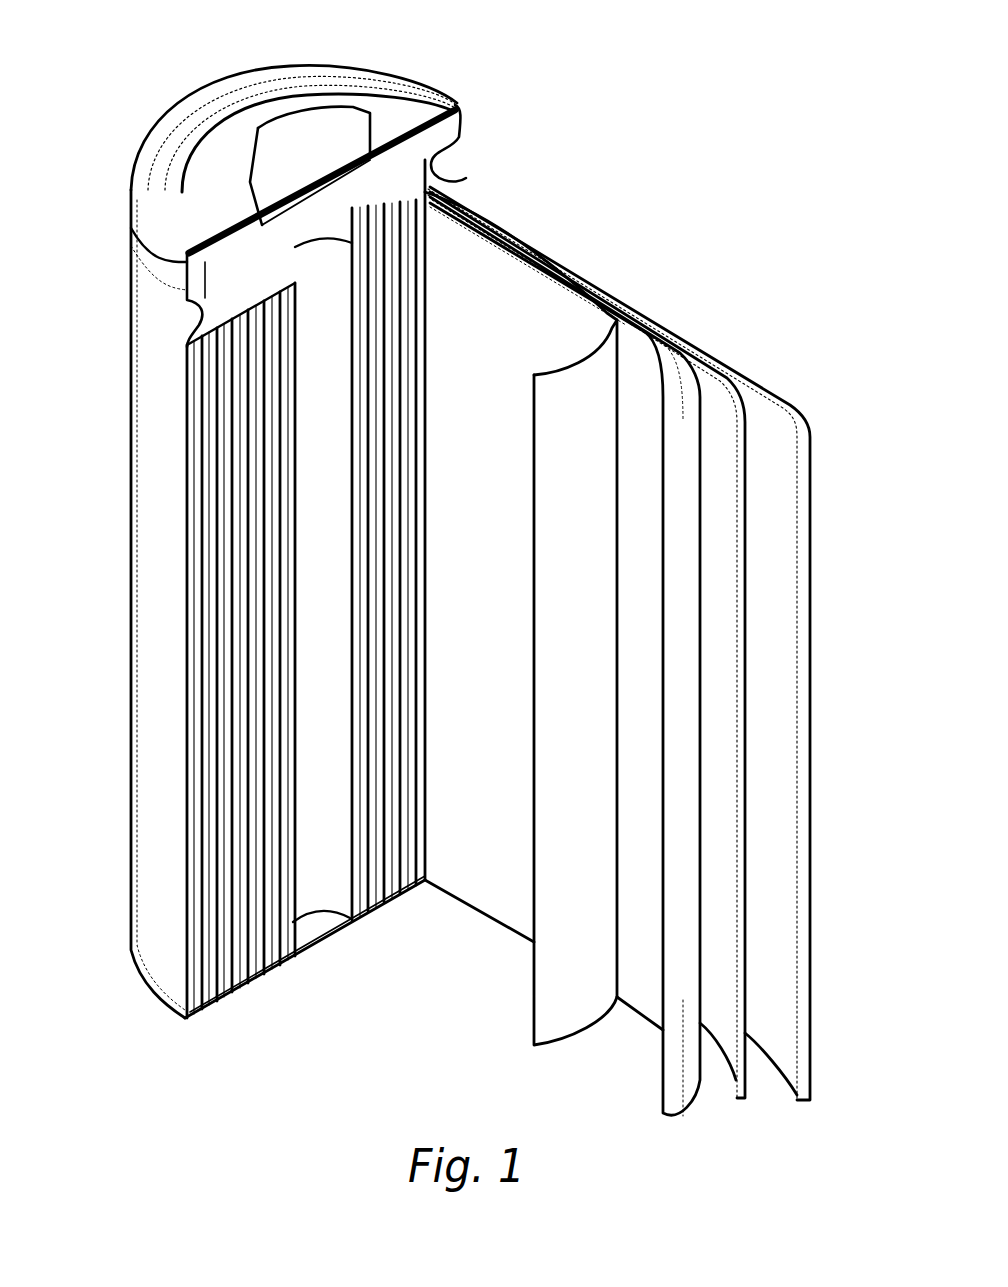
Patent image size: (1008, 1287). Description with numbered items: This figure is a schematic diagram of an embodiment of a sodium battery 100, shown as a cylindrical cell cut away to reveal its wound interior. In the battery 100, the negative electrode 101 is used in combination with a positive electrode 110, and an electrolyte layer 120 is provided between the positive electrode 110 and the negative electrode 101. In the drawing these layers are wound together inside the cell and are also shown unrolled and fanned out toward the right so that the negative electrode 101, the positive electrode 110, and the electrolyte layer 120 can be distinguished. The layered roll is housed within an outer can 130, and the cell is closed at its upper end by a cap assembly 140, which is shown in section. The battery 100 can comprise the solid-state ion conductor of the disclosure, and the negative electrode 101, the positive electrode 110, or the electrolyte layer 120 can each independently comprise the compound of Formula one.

The battery 100 is at (671, 187).
The negative electrode 101 is at (793, 410).
The positive electrode 110 is at (648, 333).
The electrolyte layer 120 is at (546, 281).
The can 130 is at (155, 577).
The cap assembly 140 is at (295, 120).